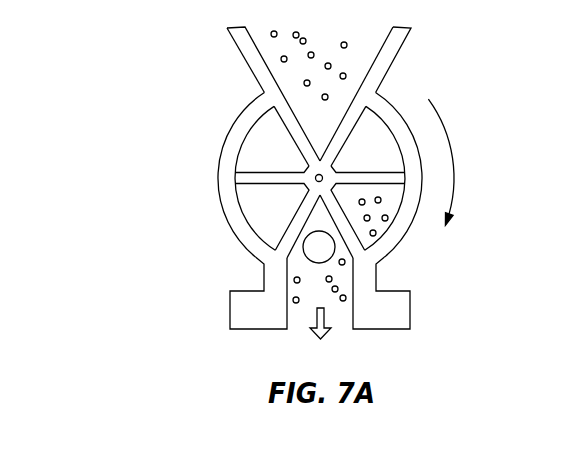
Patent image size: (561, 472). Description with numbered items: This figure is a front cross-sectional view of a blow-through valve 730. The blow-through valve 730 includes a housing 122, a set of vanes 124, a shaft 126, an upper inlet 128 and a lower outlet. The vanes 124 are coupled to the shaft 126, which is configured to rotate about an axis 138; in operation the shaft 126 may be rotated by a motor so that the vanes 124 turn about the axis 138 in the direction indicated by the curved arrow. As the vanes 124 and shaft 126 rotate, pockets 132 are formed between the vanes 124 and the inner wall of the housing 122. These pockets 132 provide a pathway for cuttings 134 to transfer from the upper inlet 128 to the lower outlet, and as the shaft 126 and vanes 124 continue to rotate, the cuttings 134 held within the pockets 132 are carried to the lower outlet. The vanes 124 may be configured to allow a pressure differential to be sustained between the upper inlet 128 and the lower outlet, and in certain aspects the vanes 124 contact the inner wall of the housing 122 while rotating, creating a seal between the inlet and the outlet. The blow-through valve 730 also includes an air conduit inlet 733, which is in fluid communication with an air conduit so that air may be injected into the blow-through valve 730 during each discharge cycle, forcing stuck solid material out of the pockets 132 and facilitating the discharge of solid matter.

The housing 122 is at (413, 155).
The vanes 124 is at (252, 182).
The shaft 126 is at (330, 186).
The upper inlet 128 is at (393, 43).
The pockets 132 is at (250, 152).
The cuttings 134 is at (295, 33).
The axis 138 is at (316, 181).
The blow-through valve 730 is at (403, 310).
The air conduit inlet 733 is at (308, 258).